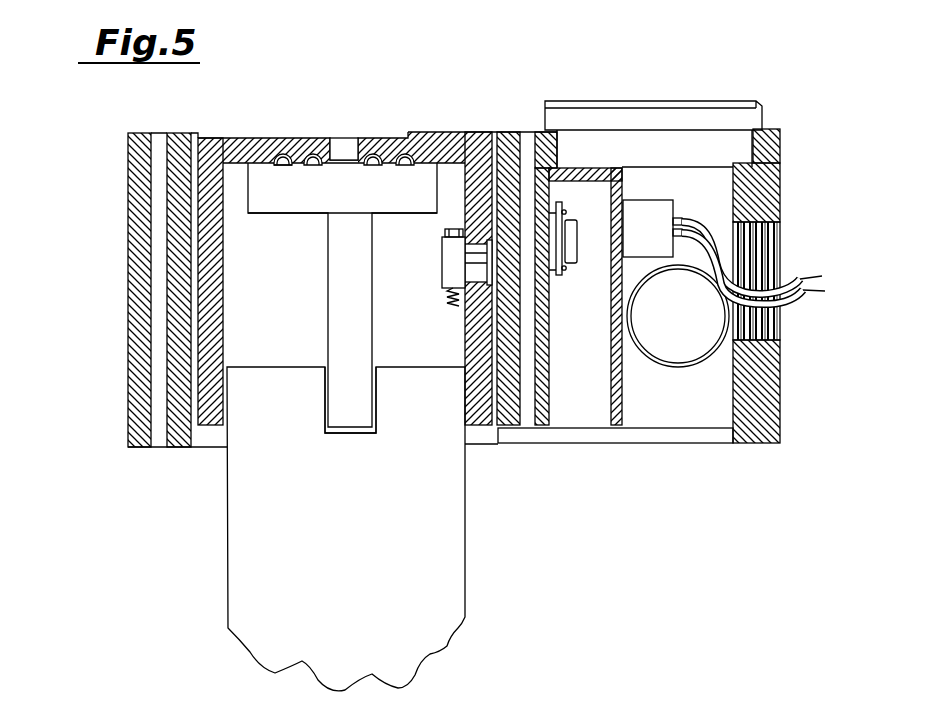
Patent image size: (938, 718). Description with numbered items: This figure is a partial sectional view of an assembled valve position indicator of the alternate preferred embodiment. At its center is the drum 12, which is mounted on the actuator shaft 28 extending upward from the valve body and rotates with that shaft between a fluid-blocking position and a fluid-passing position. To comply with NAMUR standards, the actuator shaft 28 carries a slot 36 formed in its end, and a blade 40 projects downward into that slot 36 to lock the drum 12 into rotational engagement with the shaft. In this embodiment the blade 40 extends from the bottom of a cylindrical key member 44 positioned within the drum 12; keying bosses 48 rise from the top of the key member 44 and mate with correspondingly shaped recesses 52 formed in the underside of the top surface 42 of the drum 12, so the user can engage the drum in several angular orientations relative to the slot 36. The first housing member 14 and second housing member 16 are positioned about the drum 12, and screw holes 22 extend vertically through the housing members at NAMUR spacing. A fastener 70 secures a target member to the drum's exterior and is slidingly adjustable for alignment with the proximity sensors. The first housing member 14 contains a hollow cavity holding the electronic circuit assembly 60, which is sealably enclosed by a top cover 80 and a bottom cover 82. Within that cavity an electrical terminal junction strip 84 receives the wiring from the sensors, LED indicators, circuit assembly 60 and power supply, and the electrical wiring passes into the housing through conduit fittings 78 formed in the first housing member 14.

The drum 12 is at (223, 143).
The first housing member 14 is at (778, 140).
The second housing member 16 is at (128, 203).
The screw holes 22 is at (528, 142).
The actuator shaft 28 is at (248, 550).
The slot 36 is at (377, 396).
The blade 40 is at (342, 272).
The top surface of the drum 42 is at (233, 165).
The cylindrical key member 44 is at (346, 198).
The keying bosses 48 is at (285, 166).
The shaped recesses 52 is at (283, 152).
The electronic circuit assembly 60 is at (563, 277).
The fasteners 70 is at (445, 262).
The conduit fittings 78 is at (698, 366).
The top cover 80 is at (640, 112).
The bottom cover 82 is at (675, 399).
The electrical terminal junction strip 84 is at (643, 212).